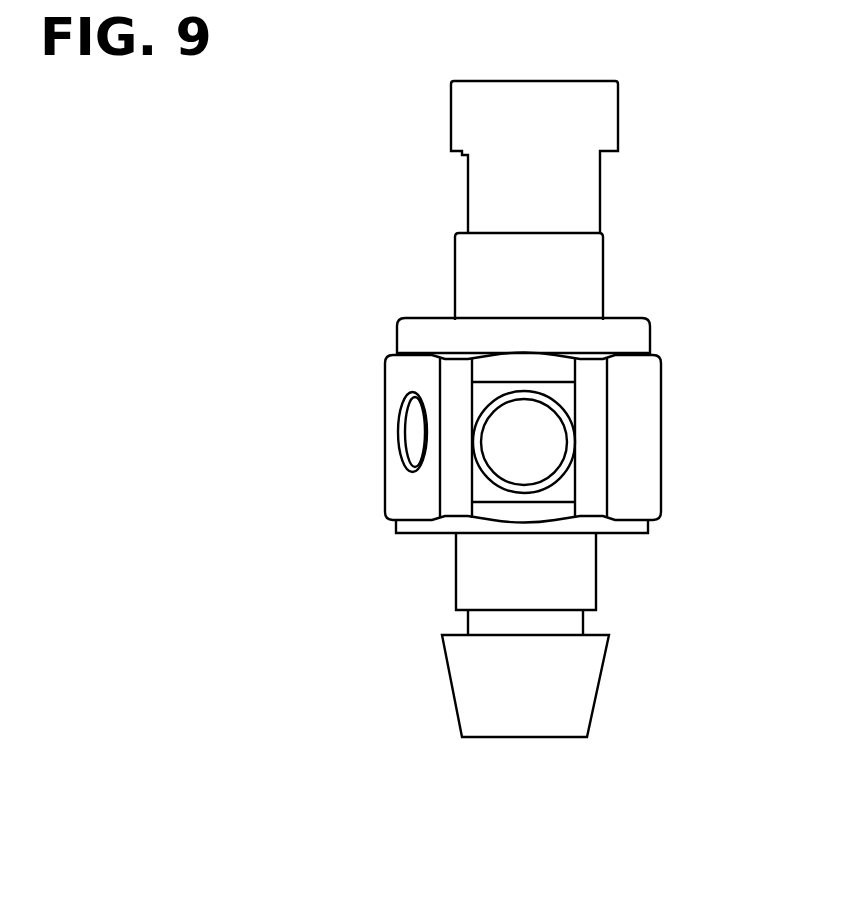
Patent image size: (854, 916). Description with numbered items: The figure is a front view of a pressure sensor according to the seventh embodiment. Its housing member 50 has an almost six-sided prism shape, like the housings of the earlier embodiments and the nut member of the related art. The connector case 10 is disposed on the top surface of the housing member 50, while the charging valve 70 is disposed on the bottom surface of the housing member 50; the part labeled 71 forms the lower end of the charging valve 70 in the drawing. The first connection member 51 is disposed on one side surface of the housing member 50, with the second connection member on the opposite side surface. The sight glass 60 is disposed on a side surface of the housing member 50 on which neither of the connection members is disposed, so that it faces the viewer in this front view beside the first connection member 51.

The connector case 10 is at (590, 197).
The housing member 50 is at (648, 377).
The first connection member 51 is at (402, 412).
The sight glass 60 is at (562, 403).
The charging valve 70 is at (607, 587).
The hose connecting cone 71 is at (598, 693).